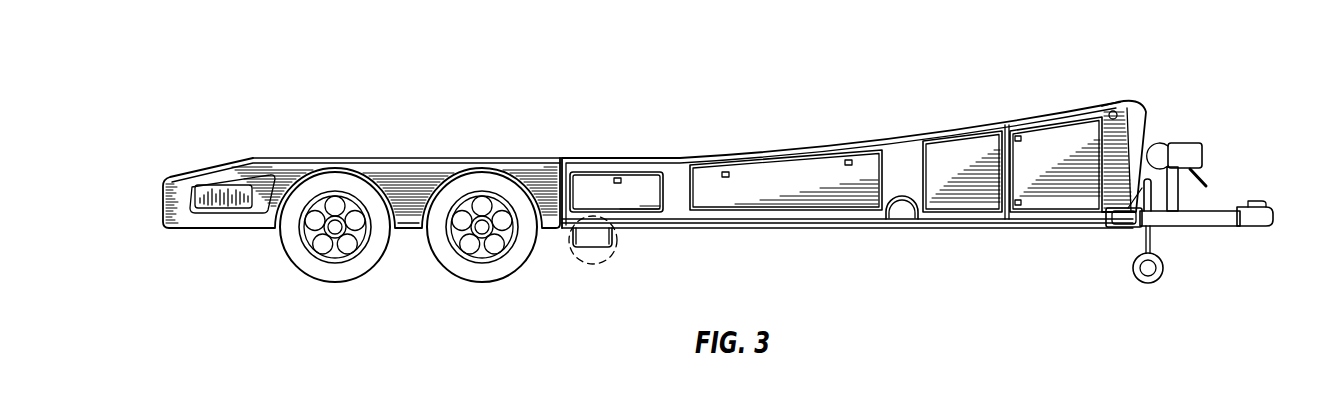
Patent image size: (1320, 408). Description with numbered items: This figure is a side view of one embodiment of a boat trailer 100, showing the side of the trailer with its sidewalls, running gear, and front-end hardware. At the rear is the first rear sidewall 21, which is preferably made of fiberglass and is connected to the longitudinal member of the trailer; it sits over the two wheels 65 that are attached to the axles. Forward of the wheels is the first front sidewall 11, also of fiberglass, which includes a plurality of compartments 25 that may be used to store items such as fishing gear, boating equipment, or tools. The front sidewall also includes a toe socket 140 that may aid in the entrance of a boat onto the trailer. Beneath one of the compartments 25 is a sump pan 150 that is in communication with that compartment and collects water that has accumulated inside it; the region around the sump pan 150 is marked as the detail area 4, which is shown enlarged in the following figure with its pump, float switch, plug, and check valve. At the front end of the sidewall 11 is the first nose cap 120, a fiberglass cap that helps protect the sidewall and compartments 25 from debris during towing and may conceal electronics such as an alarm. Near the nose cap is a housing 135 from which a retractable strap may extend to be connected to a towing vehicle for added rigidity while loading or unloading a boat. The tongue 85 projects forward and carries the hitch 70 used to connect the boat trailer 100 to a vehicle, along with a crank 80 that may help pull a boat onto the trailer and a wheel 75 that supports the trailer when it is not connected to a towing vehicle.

The boat trailer 100 is at (566, 33).
The first rear sidewall 21 is at (395, 160).
The wheels 65 is at (333, 273).
The first front sidewall 11 is at (900, 138).
The compartments 25 is at (602, 180).
The toe socket 140 is at (900, 220).
The sump pan 150 is at (598, 238).
The detail area shown in FIG. 4 is at (573, 220).
The first nose cap 120 is at (1137, 100).
The housing 135 is at (1112, 232).
The tongue 85 is at (1222, 215).
The hitch 70 is at (1243, 205).
The crank 80 is at (1175, 142).
The wheel 75 is at (1155, 280).